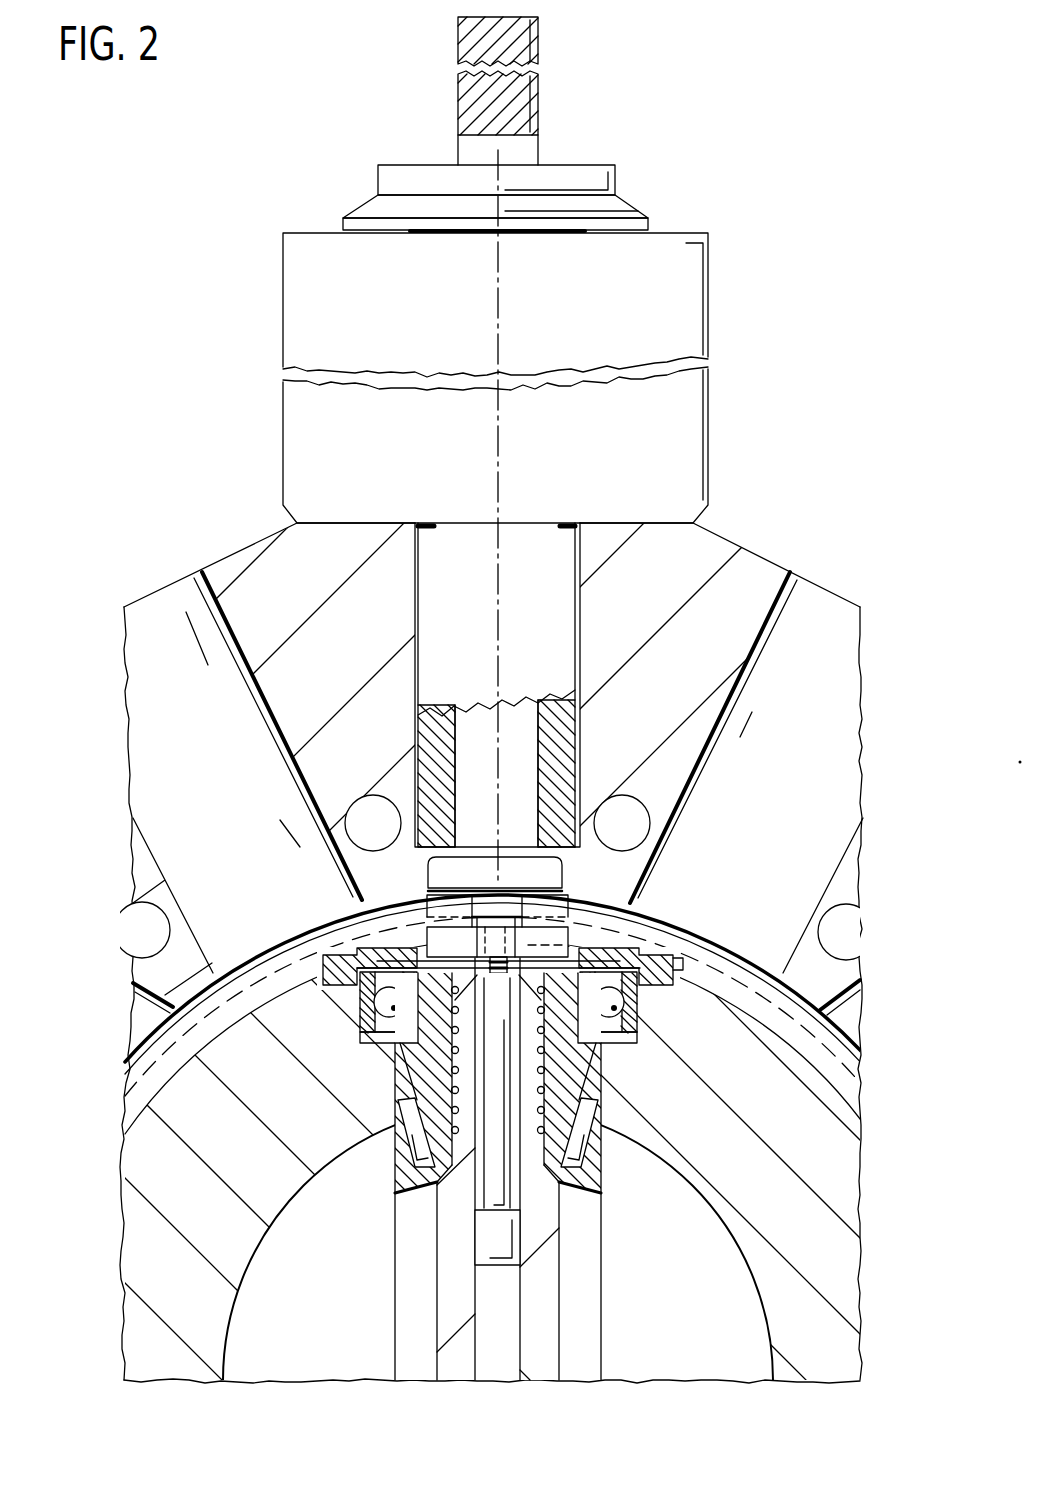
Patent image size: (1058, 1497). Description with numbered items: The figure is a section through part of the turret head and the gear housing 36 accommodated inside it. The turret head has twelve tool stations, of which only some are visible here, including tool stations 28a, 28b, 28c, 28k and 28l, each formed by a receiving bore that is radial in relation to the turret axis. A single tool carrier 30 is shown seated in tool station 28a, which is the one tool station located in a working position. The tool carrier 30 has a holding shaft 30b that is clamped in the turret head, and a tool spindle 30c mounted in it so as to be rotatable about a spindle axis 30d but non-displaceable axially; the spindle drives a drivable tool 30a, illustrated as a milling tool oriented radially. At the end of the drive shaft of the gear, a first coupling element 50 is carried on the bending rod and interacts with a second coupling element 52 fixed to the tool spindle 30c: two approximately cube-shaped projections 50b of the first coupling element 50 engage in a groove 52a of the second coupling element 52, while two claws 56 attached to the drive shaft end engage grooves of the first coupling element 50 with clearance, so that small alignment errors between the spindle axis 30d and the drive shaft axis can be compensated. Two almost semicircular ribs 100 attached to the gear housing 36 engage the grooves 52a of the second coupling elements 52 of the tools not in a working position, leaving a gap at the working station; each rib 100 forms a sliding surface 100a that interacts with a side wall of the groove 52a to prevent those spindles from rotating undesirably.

The tool station 28a is at (598, 550).
The tool station 28b is at (761, 580).
The tool station 28c is at (841, 978).
The tool station 28k is at (147, 978).
The tool station 28l is at (238, 596).
The tool carrier 30 is at (730, 299).
The drivable tool 30a is at (543, 97).
The holding shaft 30b is at (565, 727).
The tool spindle 30c is at (530, 752).
The spindle axis 30d is at (500, 336).
The gear housing 36 is at (140, 1093).
The first coupling element 50 is at (350, 940).
The projection 50b is at (453, 900).
The second coupling element 52 is at (528, 945).
The groove 52a is at (510, 898).
The claw 56 is at (648, 906).
The rib 100 is at (751, 955).
The sliding surface 100a is at (133, 1072).